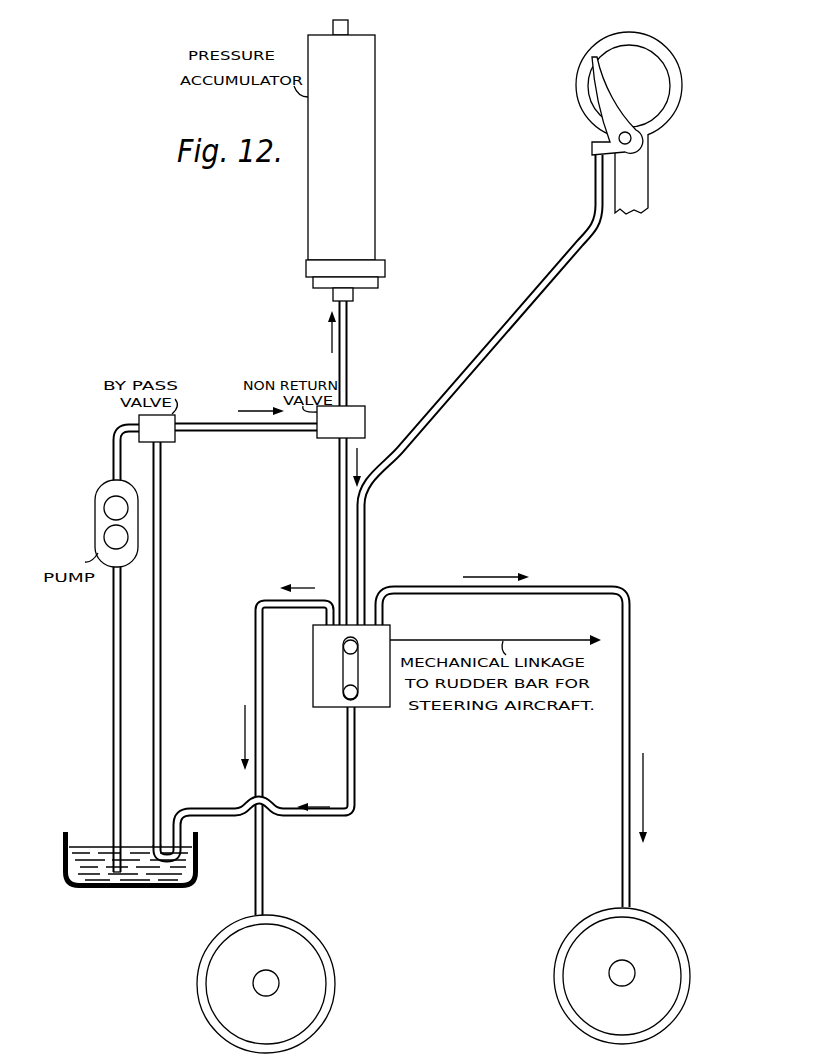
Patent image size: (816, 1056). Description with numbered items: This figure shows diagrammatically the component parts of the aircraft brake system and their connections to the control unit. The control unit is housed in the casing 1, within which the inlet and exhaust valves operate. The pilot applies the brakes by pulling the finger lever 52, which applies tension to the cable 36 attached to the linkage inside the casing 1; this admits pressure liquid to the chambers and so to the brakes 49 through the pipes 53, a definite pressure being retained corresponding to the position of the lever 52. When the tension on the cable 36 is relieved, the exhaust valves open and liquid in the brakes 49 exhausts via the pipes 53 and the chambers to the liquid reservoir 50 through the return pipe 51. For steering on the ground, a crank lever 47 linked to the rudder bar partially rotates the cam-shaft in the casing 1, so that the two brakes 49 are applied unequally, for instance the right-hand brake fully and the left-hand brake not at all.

The casing 1 is at (313, 683).
The cable 36 is at (524, 311).
The crank lever 47 is at (343, 655).
The brake 49 is at (313, 935).
The liquid reservoir 50 is at (122, 888).
The return pipe 51 is at (289, 808).
The finger lever 52 is at (610, 88).
The pipes 53 is at (270, 601).